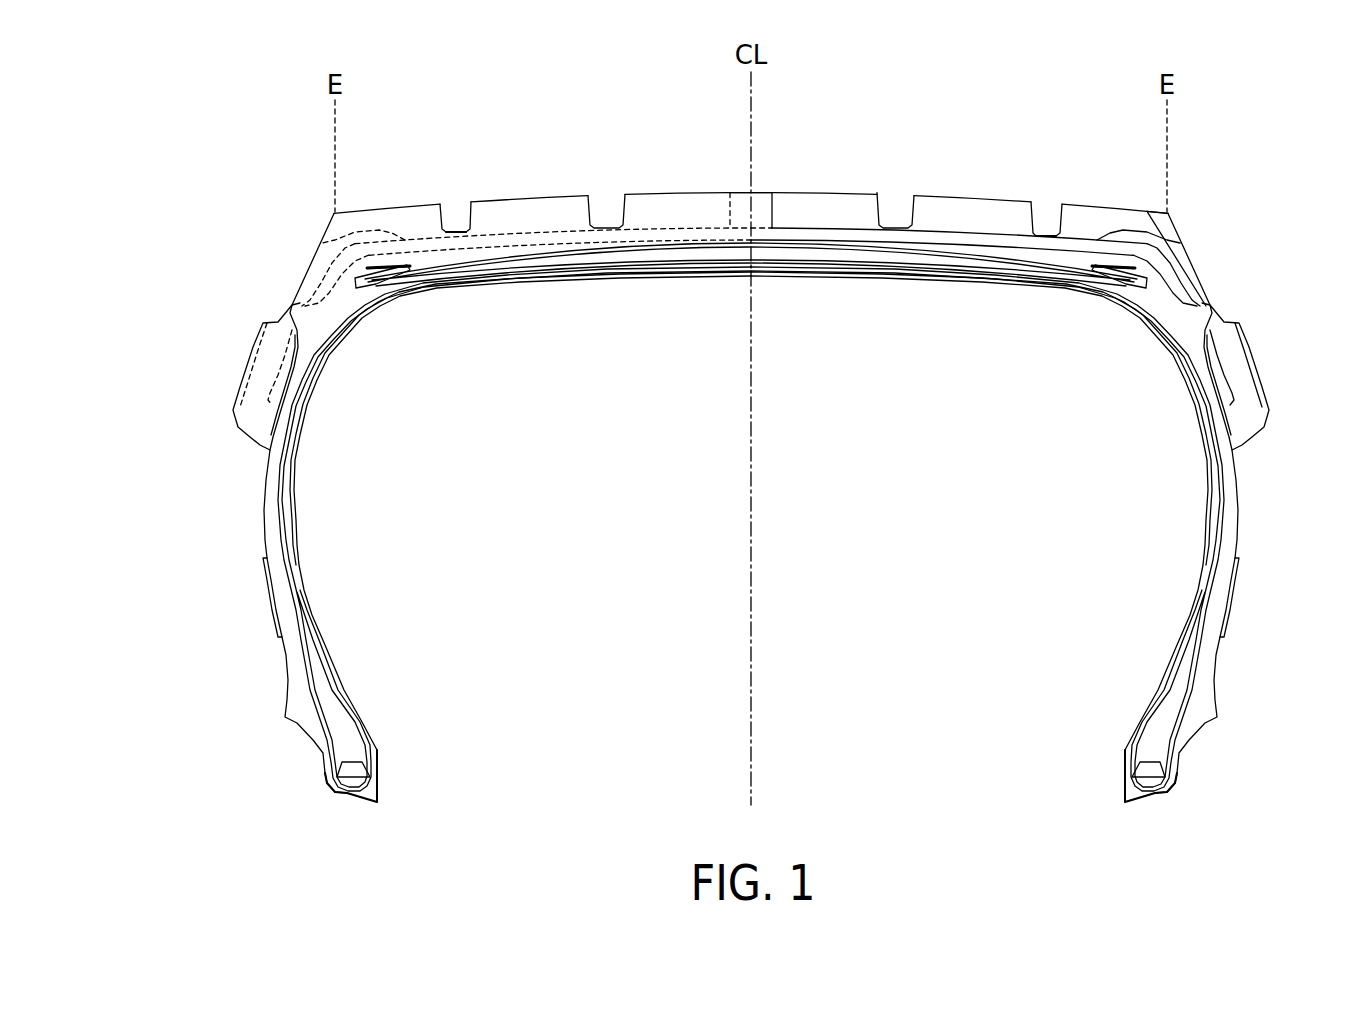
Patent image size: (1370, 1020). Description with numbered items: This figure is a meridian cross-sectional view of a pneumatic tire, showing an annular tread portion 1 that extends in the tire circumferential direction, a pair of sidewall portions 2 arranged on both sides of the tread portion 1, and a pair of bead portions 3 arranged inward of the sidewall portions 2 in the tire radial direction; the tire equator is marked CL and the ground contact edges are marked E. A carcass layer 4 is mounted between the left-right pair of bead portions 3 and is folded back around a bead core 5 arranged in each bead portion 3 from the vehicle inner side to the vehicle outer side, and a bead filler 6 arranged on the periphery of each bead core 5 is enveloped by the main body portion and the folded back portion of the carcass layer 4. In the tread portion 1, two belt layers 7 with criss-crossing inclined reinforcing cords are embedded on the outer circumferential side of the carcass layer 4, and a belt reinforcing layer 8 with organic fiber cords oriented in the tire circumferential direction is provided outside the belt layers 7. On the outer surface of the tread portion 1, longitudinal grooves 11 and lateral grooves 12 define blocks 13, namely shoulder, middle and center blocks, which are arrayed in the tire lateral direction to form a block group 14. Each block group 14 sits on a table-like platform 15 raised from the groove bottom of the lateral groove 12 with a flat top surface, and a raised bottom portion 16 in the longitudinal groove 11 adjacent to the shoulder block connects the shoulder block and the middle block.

The tread portion 1 is at (765, 154).
The sidewall portion 2 is at (1259, 490).
The bead portion 3 is at (1199, 771).
The carcass layer 4 is at (1184, 370).
The bead core 5 is at (1142, 775).
The bead filler 6 is at (1147, 733).
The belt layer 7 is at (935, 262).
The belt reinforcing layer 8 is at (1078, 288).
The longitudinal groove 11 is at (1042, 210).
The lateral groove 12 is at (683, 228).
The block 13 is at (1123, 207).
The block group 14 is at (1160, 112).
The platform 15 is at (1210, 243).
The raised bottom portion 16 is at (1052, 228).